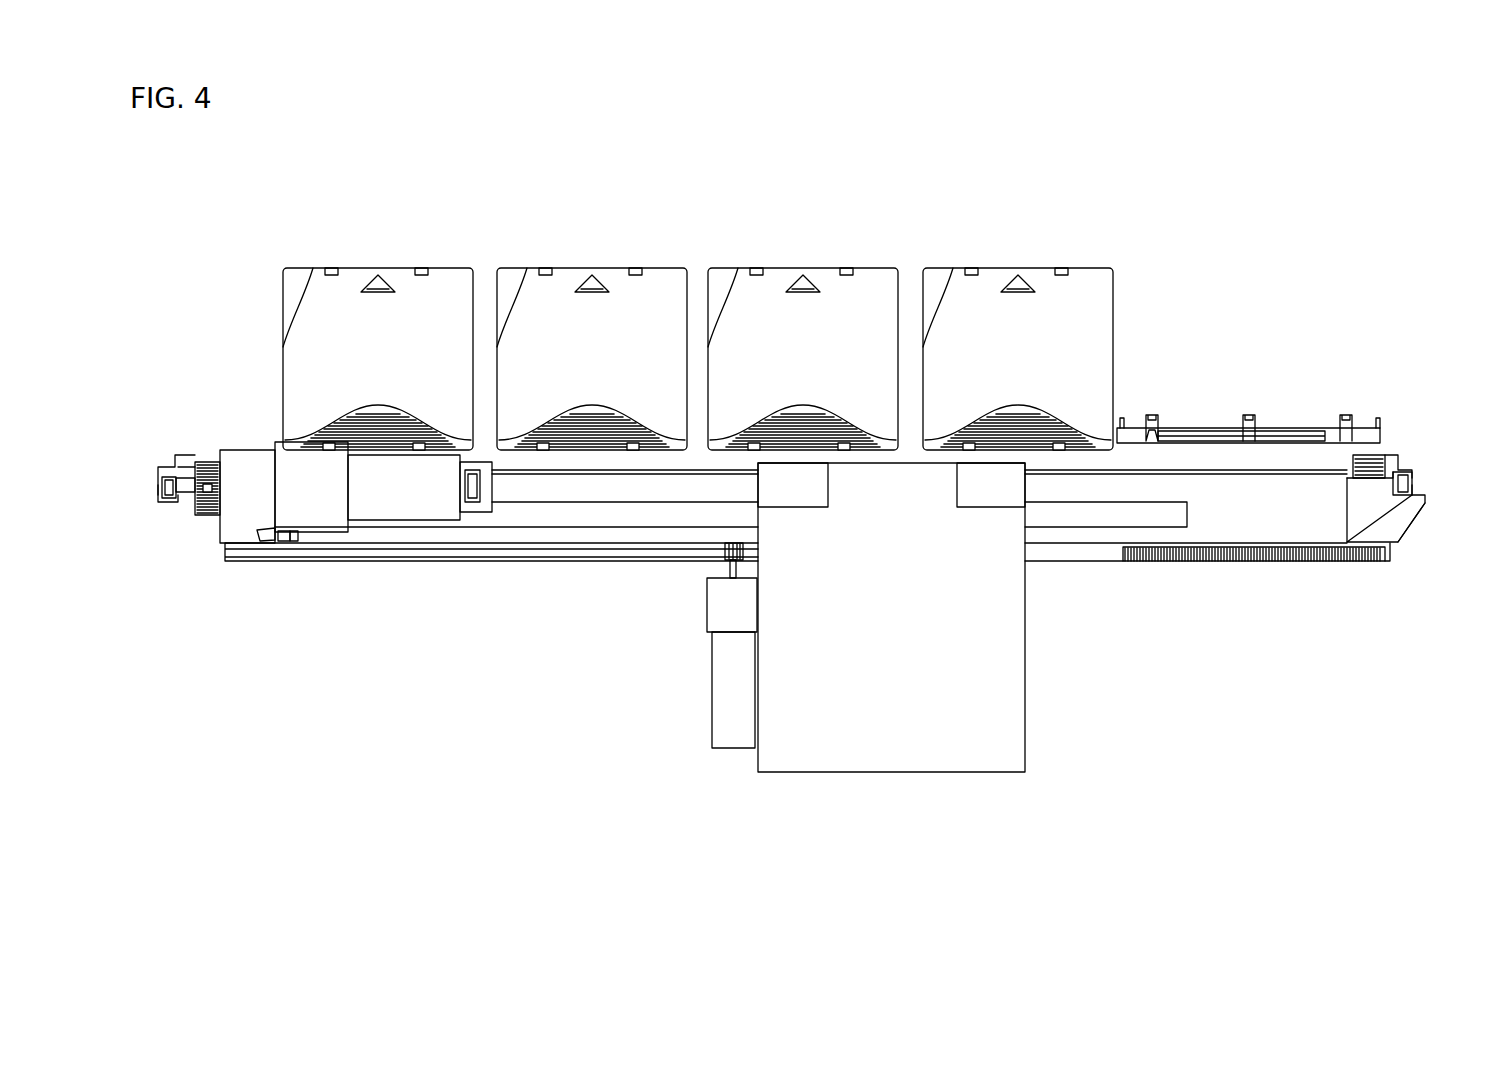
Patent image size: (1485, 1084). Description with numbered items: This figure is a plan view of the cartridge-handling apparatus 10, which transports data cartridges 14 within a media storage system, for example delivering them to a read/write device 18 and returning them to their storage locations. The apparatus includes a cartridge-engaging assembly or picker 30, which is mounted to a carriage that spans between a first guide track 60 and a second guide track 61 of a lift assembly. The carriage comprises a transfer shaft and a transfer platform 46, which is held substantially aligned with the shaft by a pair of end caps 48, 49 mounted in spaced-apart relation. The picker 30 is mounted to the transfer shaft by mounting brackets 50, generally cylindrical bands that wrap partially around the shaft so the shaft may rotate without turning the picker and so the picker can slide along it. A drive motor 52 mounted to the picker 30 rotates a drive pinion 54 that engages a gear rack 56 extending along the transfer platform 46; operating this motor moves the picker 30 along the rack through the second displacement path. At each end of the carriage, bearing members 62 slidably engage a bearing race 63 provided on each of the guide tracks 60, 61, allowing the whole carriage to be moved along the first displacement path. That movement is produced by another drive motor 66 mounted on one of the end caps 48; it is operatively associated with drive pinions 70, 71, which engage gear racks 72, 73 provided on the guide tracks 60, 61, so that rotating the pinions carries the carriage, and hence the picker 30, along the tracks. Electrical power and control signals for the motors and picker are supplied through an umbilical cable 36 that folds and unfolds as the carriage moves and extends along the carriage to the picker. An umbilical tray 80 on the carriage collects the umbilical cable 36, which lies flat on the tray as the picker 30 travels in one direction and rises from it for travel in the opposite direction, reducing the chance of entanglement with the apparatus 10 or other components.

The cartridge-handling apparatus 10 is at (1175, 285).
The data cartridges 14 is at (968, 268).
The read/write device 18 is at (1196, 428).
The picker 30 is at (1025, 720).
The umbilical cable 36 is at (1190, 513).
The transfer platform 46 is at (556, 562).
The end cap 48 is at (265, 450).
The end cap 49 is at (1403, 535).
The mounting brackets 50 is at (970, 510).
The drive motor 52 is at (712, 700).
The drive pinion 54 is at (725, 548).
The gear rack 56 is at (1197, 562).
The first guide track 60 is at (163, 465).
The second guide track 61 is at (1385, 456).
The bearing members 62 is at (165, 488).
The bearing race 63 is at (162, 503).
The drive motor 66 is at (420, 487).
The drive pinion 70 is at (198, 508).
The drive pinion 71 is at (1333, 478).
The gear rack 72 is at (205, 460).
The gear rack 73 is at (1352, 463).
The umbilical tray 80 is at (1361, 507).